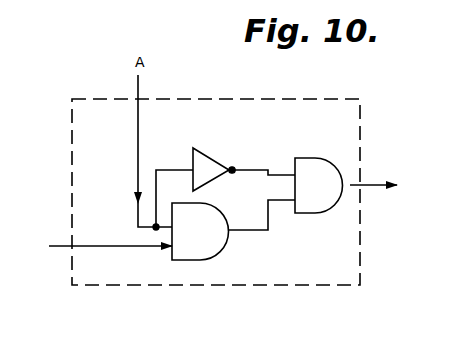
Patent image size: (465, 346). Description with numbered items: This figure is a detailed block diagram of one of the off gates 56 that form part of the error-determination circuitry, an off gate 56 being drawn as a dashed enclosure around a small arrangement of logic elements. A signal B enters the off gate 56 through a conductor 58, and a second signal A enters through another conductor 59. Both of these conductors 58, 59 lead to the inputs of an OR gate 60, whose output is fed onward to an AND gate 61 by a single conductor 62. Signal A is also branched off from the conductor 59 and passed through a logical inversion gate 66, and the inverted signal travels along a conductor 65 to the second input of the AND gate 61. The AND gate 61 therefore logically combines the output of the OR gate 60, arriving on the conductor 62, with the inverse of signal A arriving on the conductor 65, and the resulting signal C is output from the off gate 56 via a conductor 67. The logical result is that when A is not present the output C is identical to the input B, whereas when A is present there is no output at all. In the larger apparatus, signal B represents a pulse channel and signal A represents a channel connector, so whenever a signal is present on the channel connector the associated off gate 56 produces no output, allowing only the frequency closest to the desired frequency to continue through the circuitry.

The off gate 56 is at (278, 93).
The conductor 58 is at (58, 249).
The conductor 59 is at (140, 83).
The OR gate 60 is at (200, 260).
The AND gate 61 is at (313, 158).
The conductor 62 is at (270, 232).
The conductor 65 is at (257, 170).
The logical inversion gate 66 is at (204, 158).
The conductor 67 is at (377, 182).